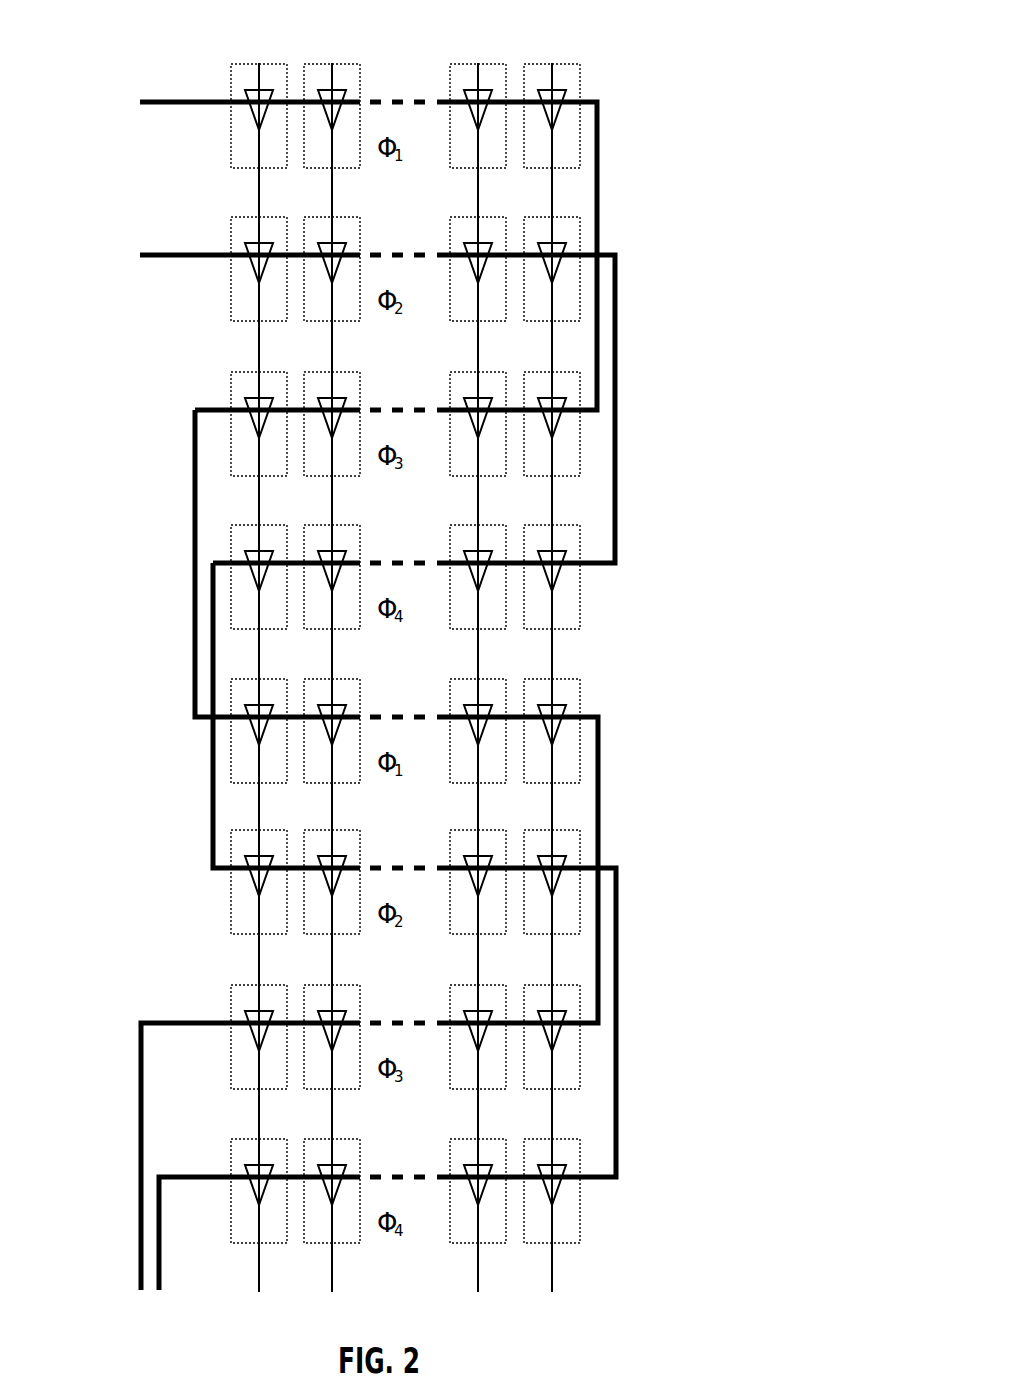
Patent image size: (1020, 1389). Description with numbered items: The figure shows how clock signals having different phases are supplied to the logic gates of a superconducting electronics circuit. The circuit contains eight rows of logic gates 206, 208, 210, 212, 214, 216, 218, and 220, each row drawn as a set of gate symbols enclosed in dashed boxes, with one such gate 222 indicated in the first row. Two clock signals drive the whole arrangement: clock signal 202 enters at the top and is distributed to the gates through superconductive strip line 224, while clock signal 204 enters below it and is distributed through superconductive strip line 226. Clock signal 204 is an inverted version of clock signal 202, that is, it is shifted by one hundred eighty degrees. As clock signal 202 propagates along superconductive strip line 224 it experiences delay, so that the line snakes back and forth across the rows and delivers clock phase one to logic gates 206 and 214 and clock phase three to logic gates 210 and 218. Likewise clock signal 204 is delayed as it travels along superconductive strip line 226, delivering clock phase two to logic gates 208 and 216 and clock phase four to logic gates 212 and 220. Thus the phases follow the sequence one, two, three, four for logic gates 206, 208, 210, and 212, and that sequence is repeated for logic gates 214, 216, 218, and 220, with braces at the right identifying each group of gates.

The clock signal 202 is at (139, 102).
The clock signal 204 is at (139, 255).
The logic gates 206 is at (528, 84).
The logic gates 208 is at (528, 266).
The logic gates 210 is at (528, 421).
The logic gates 212 is at (528, 574).
The logic gates 214 is at (528, 728).
The logic gates 216 is at (528, 879).
The logic gates 218 is at (528, 1034).
The logic gates 220 is at (528, 1188).
The logic gate 222 is at (533, 62).
The superconductive strip line 224 is at (193, 460).
The superconductive strip line 226 is at (208, 790).